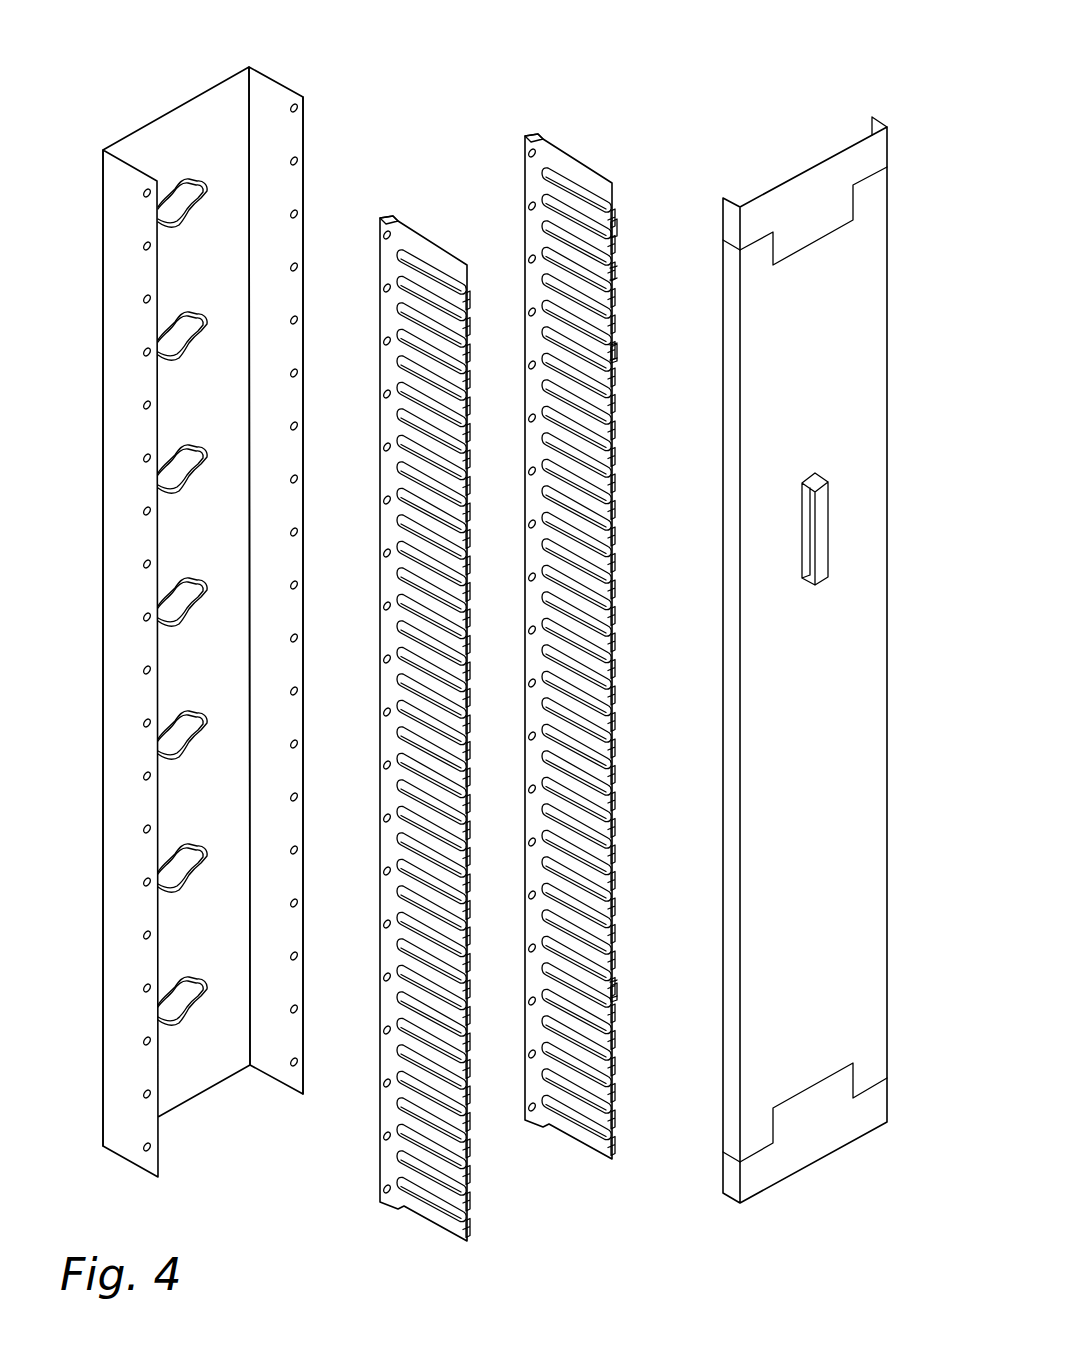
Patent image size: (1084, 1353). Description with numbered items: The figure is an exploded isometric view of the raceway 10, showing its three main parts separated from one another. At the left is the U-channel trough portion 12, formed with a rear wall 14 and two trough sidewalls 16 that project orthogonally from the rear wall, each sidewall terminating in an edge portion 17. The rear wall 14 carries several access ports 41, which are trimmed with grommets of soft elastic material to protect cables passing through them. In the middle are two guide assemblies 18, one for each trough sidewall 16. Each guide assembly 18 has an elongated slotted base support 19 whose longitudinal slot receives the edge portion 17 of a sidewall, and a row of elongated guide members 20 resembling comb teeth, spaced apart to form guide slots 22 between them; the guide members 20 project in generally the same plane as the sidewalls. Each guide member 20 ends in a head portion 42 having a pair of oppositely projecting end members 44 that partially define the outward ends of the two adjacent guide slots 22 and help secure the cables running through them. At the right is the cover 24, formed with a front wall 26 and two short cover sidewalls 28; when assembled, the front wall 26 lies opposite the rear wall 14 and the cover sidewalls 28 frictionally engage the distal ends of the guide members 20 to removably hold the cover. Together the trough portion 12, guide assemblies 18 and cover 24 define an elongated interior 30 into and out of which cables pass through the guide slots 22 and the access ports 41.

The raceway 10 is at (655, 33).
The trough portion 12 is at (196, 97).
The rear wall 14 is at (140, 128).
The trough sidewalls 16 is at (272, 80).
The edge portion 17 is at (383, 216).
The guide assembly 18 is at (387, 262).
The slotted base support 19 is at (385, 313).
The guide members 20 is at (423, 368).
The guide slots 22 is at (432, 410).
The cover 24 is at (858, 390).
The front wall 26 is at (858, 300).
The cover sidewalls 28 is at (177, 203).
The interior 30 is at (177, 136).
The access ports 41 is at (205, 180).
The head portion 42 is at (617, 225).
The end members 44 is at (618, 268).